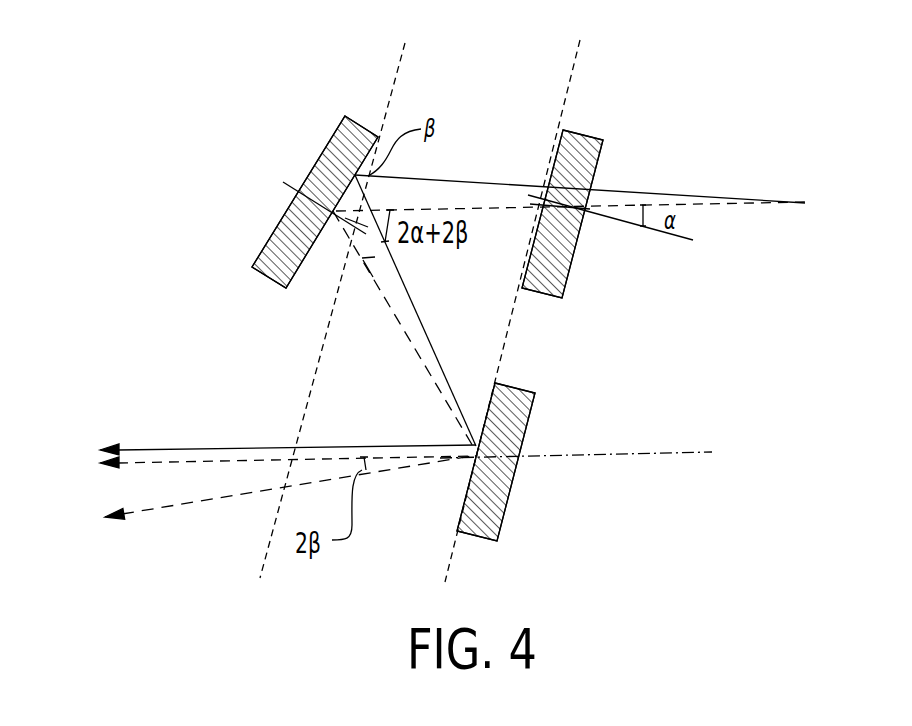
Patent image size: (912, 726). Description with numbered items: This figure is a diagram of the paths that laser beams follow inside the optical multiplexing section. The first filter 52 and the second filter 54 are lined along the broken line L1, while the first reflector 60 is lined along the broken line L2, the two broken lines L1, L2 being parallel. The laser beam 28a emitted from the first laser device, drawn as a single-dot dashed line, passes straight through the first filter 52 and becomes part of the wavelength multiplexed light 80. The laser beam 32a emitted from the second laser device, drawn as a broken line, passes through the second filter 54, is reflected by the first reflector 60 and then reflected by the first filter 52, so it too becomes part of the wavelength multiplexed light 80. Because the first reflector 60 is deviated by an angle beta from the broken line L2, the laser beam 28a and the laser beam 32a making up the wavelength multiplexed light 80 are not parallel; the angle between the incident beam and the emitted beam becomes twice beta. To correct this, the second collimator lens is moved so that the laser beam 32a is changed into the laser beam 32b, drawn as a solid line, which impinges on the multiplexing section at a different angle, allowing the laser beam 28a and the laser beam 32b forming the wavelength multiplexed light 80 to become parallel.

The first reflector 60 is at (327, 126).
The second filter 54 is at (578, 136).
The first filter 52 is at (520, 384).
The laser beam 32b is at (699, 198).
The laser beam 32a is at (712, 208).
The laser beam 28a is at (661, 453).
The wavelength multiplexed light 80 is at (104, 532).
The broken line L1 is at (521, 295).
The broken line L2 is at (338, 293).